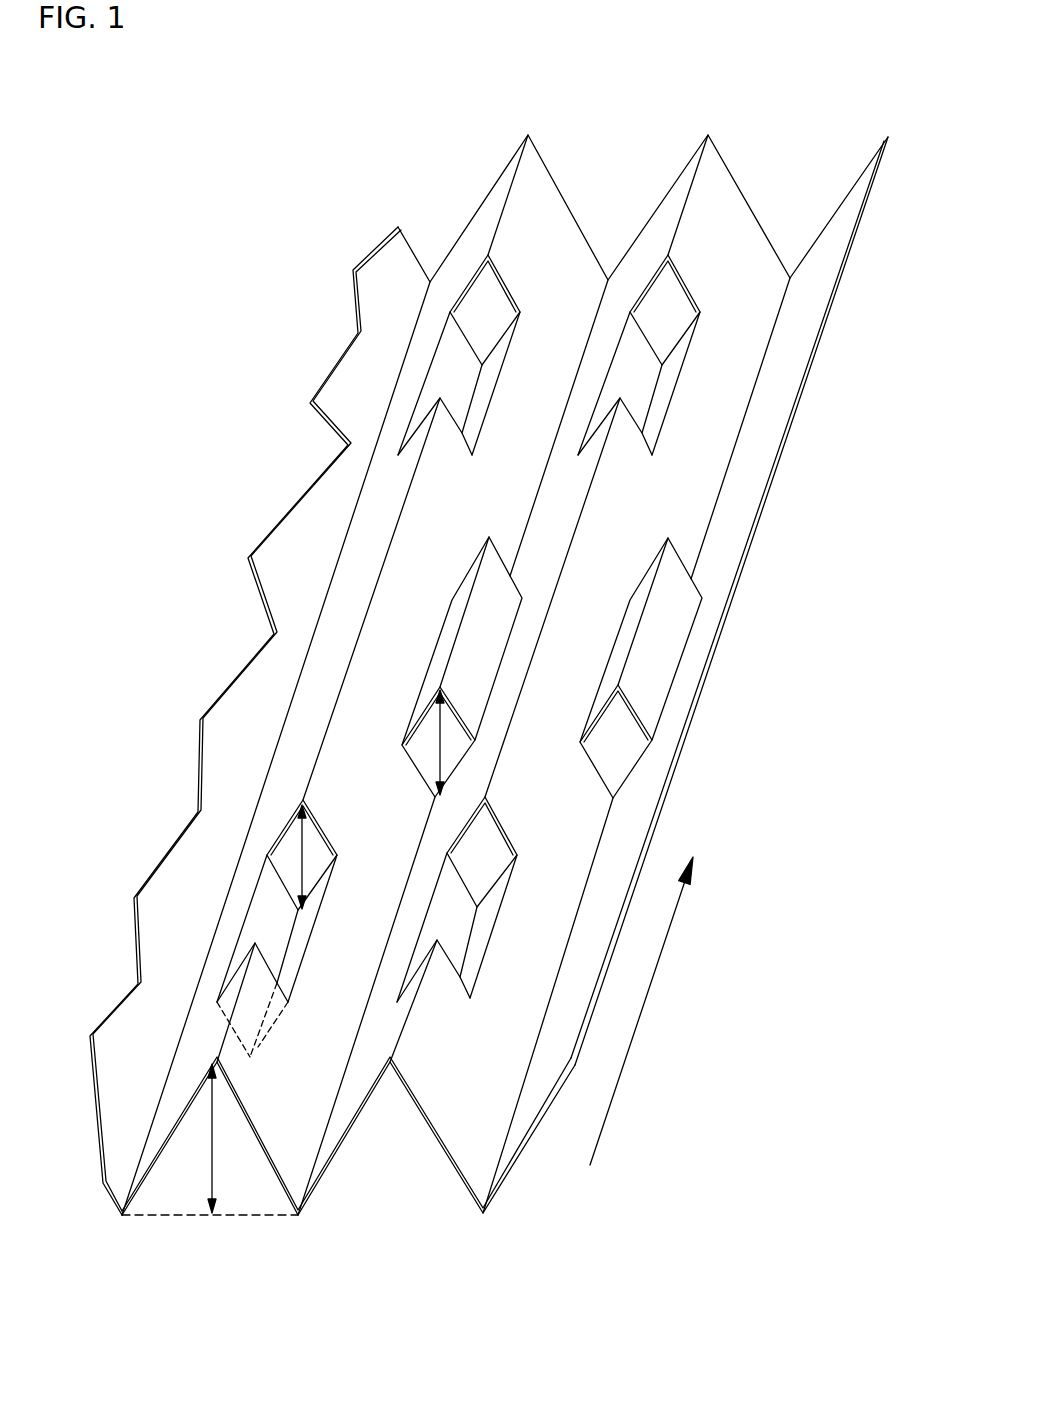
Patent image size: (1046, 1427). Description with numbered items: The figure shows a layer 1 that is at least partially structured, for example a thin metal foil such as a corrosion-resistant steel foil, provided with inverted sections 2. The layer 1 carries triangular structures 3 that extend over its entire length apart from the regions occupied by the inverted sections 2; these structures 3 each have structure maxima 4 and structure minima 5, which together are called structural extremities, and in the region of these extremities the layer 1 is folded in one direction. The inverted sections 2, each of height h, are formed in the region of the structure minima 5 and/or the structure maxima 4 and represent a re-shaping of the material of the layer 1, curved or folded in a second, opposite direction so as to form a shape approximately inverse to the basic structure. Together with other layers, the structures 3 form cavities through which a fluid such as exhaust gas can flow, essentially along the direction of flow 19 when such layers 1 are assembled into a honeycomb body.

The layer 1 is at (737, 225).
The inverted section 2 is at (655, 653).
The triangular structure 3 is at (538, 203).
The structure maximum 4 is at (708, 135).
The structure minimum 5 is at (122, 1215).
The direction of flow 19 is at (640, 1017).